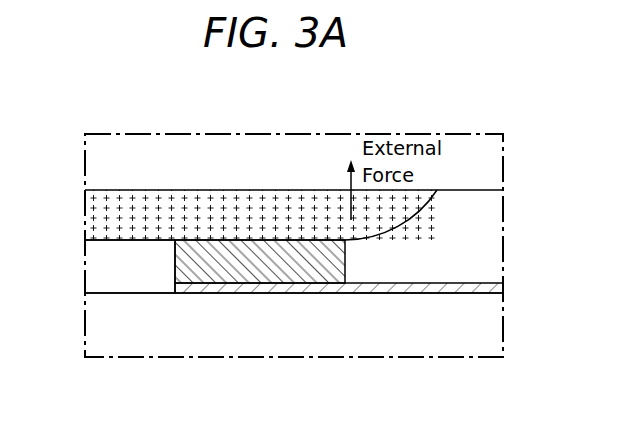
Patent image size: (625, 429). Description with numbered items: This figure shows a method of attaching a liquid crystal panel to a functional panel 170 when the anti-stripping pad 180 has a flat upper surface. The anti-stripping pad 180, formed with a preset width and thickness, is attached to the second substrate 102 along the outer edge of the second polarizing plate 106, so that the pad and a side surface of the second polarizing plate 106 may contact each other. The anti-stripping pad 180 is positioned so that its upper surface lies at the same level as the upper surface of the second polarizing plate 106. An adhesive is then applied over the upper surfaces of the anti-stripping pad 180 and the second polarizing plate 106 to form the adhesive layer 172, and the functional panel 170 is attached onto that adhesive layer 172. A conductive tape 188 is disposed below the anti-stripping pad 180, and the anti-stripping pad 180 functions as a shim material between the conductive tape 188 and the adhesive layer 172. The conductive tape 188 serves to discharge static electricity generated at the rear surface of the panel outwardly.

The functional panel 170 is at (478, 161).
The adhesive layer 172 is at (149, 210).
The second polarizing plate 106 is at (100, 264).
The second substrate 102 is at (100, 318).
The anti-stripping pad 180 is at (298, 270).
The conductive tape 188 is at (410, 288).